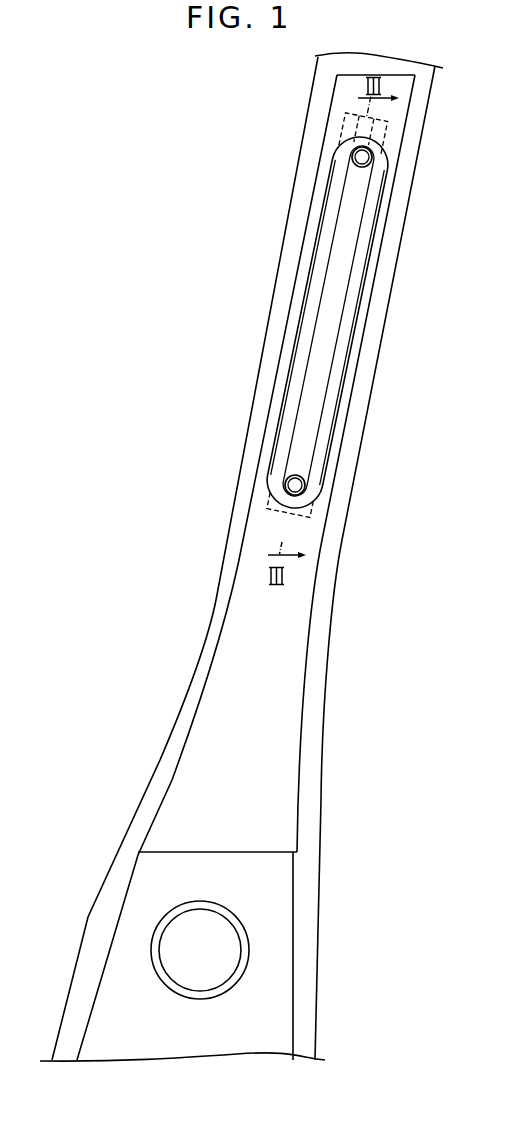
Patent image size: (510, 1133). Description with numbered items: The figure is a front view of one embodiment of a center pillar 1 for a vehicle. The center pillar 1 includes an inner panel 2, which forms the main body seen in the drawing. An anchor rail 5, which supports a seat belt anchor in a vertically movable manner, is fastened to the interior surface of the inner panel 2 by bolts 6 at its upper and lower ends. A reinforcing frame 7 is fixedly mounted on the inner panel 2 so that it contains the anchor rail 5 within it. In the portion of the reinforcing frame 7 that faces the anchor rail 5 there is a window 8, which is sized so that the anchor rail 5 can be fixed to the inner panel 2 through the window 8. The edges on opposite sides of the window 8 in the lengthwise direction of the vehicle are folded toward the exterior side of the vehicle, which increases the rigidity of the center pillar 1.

The center pillar 1 is at (197, 587).
The inner panel 2 is at (208, 655).
The anchor rail 5 is at (320, 276).
The bolts 6 is at (353, 158).
The reinforcing frame 7 is at (210, 747).
The window 8 is at (293, 397).